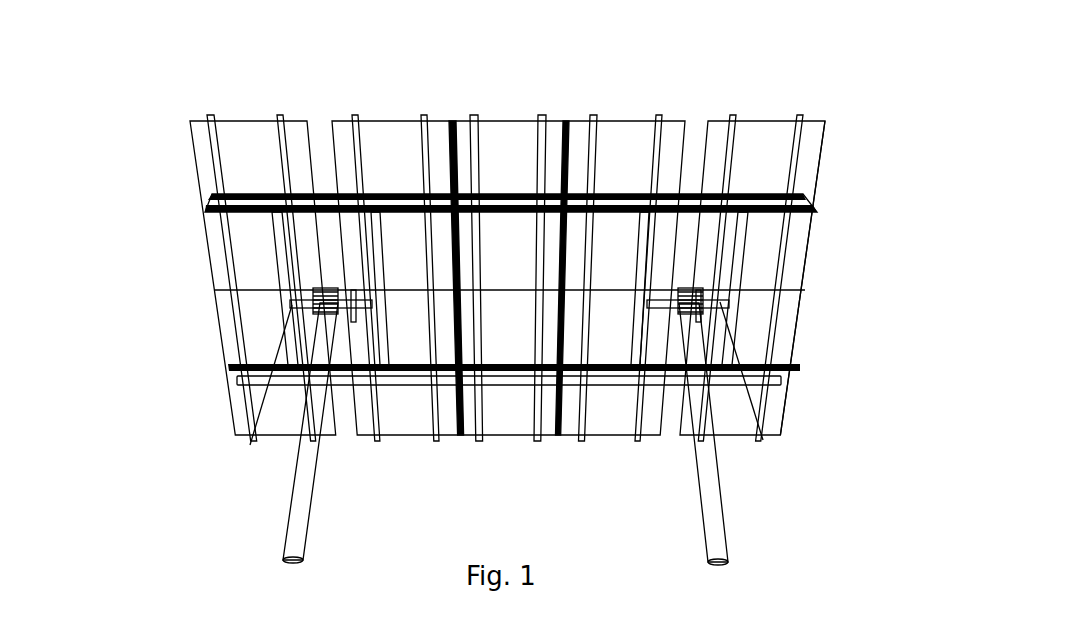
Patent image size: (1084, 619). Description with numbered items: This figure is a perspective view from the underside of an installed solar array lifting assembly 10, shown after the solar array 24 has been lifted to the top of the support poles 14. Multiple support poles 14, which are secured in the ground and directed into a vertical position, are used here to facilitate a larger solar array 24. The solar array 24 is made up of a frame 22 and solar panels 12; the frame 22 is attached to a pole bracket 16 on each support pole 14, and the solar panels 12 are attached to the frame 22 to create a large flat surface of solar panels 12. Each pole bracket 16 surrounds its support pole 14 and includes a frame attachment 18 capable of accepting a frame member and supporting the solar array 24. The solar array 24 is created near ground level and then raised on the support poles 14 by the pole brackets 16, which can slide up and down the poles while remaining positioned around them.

The solar array lifting assembly 10 is at (166, 195).
The solar panels 12 is at (386, 127).
The support pole 14 is at (312, 464).
The pole bracket 16 is at (342, 292).
The frame attachment 18 is at (353, 314).
The frame 22 is at (270, 386).
The solar array 24 is at (808, 330).